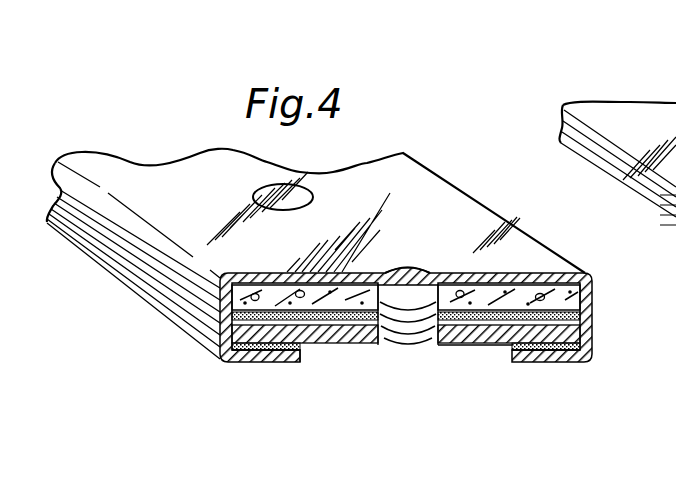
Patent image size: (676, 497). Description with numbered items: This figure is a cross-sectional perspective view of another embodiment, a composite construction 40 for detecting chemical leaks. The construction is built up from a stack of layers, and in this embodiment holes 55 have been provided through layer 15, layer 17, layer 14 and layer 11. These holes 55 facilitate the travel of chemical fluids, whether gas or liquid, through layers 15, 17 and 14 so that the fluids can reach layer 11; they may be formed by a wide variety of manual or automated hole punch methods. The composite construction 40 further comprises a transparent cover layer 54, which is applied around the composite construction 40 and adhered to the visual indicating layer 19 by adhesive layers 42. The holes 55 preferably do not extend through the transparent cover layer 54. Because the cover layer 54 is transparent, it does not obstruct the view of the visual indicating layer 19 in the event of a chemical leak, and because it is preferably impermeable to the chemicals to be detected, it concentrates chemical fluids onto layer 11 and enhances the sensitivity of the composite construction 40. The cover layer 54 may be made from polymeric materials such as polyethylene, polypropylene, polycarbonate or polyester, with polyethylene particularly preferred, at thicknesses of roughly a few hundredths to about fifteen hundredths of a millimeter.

The composite construction 40 is at (188, 112).
The holes 55 is at (307, 186).
The layer 11 is at (590, 292).
The layer 14 is at (556, 313).
The layer 15 is at (470, 344).
The layer 17 is at (565, 328).
The transparent cover layer 54 is at (560, 360).
The adhesive layers 42 is at (294, 348).
The visual indicating layer 19 is at (463, 358).